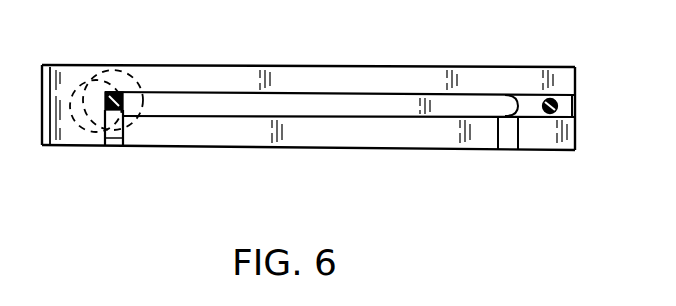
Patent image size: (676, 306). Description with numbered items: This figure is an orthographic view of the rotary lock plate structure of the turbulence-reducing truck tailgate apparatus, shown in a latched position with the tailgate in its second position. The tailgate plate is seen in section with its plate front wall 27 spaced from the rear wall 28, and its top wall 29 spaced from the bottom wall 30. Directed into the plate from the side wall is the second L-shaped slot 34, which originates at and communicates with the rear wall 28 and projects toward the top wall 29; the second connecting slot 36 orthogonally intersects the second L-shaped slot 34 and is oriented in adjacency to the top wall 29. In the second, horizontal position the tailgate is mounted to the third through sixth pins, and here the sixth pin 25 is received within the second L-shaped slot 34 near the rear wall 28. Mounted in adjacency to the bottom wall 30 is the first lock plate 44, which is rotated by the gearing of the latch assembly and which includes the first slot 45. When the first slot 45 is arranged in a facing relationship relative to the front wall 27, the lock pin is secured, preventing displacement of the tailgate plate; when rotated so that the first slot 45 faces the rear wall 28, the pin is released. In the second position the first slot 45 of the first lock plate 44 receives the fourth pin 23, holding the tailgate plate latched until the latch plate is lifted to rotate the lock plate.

The fourth pin 23 is at (128, 94).
The sixth pin 25 is at (577, 103).
The plate front wall 27 is at (402, 66).
The rear wall 28 is at (360, 148).
The top wall 29 is at (577, 68).
The bottom wall 30 is at (42, 118).
The second L-shaped slot 34 is at (468, 103).
The second connecting slot 36 is at (507, 142).
The first lock plate 44 is at (75, 148).
The first slot 45 is at (118, 66).